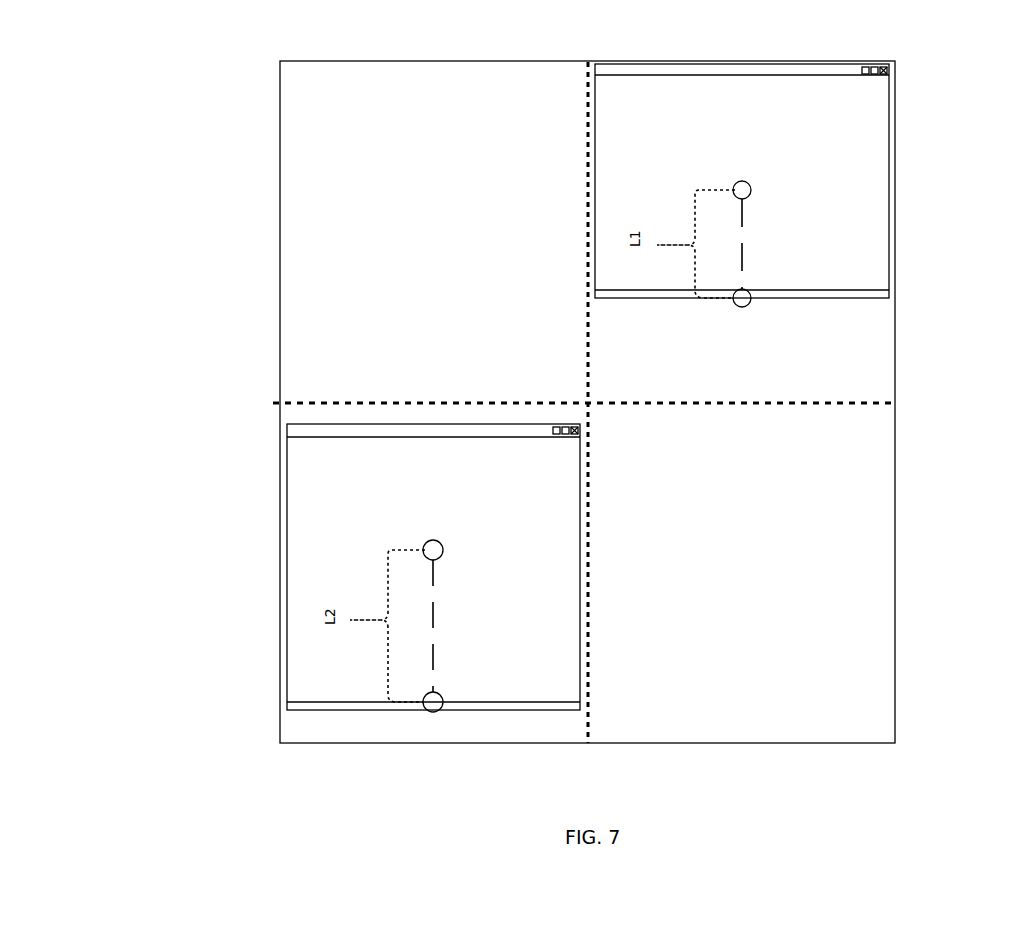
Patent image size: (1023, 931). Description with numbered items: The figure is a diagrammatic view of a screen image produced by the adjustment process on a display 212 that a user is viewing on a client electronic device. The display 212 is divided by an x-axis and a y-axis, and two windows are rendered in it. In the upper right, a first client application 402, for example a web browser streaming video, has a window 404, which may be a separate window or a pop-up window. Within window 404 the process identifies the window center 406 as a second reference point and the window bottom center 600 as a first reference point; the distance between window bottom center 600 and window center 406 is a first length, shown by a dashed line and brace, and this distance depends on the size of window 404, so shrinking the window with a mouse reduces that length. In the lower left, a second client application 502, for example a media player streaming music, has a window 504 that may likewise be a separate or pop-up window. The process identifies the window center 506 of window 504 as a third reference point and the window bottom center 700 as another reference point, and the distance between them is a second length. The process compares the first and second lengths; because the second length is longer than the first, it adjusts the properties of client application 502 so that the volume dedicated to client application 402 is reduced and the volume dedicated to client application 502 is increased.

The display 212 is at (73, 50).
The client application 402 is at (622, 137).
The window 404 is at (887, 178).
The window center 406 is at (745, 190).
The window bottom center 600 is at (750, 298).
The client application 502 is at (296, 550).
The window 504 is at (580, 567).
The window center 506 is at (443, 550).
The window bottom center 700 is at (443, 702).